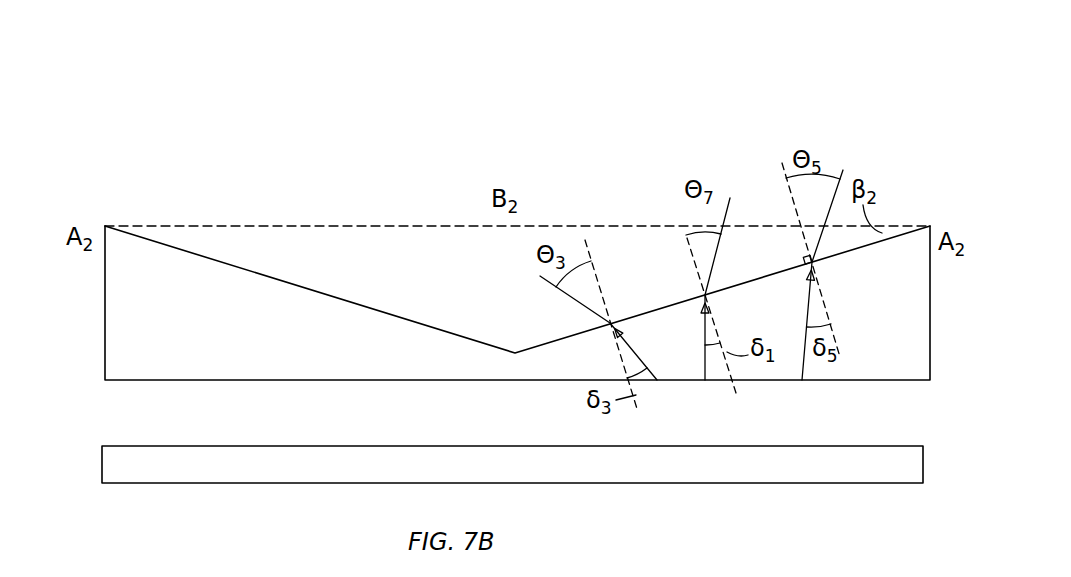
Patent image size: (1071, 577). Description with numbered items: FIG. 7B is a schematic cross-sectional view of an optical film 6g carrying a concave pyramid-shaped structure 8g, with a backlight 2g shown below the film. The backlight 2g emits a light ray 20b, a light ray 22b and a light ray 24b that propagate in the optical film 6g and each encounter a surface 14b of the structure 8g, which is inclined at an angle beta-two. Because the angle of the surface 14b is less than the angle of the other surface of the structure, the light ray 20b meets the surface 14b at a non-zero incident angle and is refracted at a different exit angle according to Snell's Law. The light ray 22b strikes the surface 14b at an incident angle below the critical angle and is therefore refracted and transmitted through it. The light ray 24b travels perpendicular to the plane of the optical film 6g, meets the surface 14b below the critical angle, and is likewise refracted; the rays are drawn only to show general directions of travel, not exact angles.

The concave pyramid-shaped structure 8g is at (318, 150).
The surface 14b is at (178, 248).
The light ray 20b is at (638, 363).
The light ray 24b is at (705, 362).
The light ray 22b is at (802, 362).
The optical film 6g is at (898, 373).
The backlight 2g is at (158, 483).